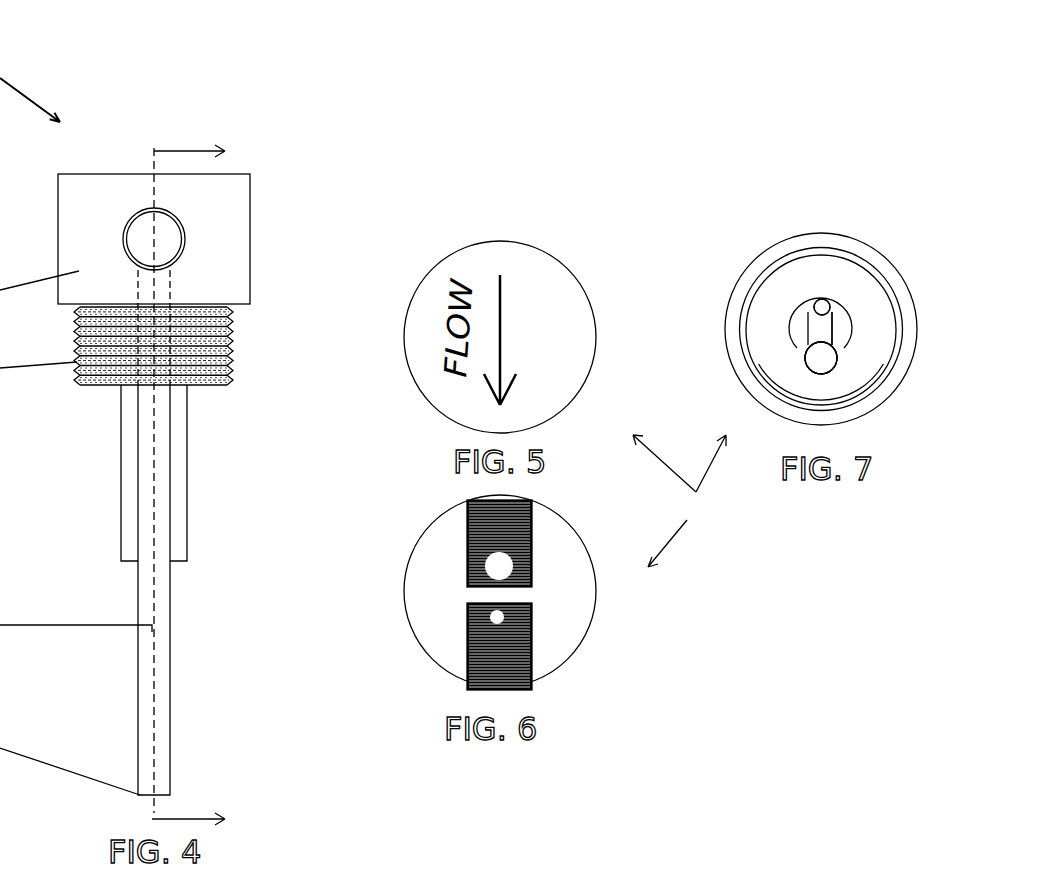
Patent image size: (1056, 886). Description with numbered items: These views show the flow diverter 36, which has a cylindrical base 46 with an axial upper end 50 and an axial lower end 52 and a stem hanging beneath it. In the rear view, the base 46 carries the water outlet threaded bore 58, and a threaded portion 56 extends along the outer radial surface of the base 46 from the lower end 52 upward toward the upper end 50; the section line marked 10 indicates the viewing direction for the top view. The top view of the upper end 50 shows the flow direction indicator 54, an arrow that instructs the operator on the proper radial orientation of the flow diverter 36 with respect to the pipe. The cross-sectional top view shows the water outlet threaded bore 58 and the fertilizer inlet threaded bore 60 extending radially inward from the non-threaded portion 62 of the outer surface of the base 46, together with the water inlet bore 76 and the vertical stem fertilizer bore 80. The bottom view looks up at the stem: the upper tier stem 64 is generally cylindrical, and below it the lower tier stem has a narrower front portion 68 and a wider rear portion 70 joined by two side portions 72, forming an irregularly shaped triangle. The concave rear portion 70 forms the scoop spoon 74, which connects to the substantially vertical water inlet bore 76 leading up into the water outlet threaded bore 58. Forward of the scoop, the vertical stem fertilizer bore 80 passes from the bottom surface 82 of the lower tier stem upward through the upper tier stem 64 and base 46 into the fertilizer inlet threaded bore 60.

In FIG. 4, the section line / viewing direction 10 is at (188, 475).
In FIG. 7, the flow diverter 36 is at (679, 501).
In FIG. 6, the cylindrical base 46 is at (450, 593).
In FIG. 4, the axial upper end 50 is at (228, 174).
In FIG. 5, the axial upper end 50 is at (477, 258).
In FIG. 4, the axial lower end 52 is at (202, 385).
In FIG. 5, the flow direction indicator 54 is at (498, 323).
In FIG. 7, the threaded portion 56 is at (830, 407).
In FIG. 4, the water outlet threaded bore 58 is at (163, 247).
In FIG. 6, the water outlet threaded bore 58 is at (468, 528).
In FIG. 6, the fertilizer inlet threaded bore 60 is at (532, 680).
In FIG. 7, the non-threaded portion 62 is at (778, 253).
In FIG. 7, the upper tier stem 64 is at (842, 318).
In FIG. 7, the front portion 68 is at (818, 302).
In FIG. 4, the rear portion 70 is at (158, 478).
In FIG. 7, the rear portion 70 is at (815, 345).
In FIG. 7, the side portions 72 is at (833, 330).
In FIG. 7, the scoop spoon 74 is at (815, 345).
In FIG. 4, the water inlet bore 76 is at (155, 363).
In FIG. 6, the water inlet bore 76 is at (495, 568).
In FIG. 7, the water inlet bore 76 is at (820, 360).
In FIG. 6, the vertical stem fertilizer bore 80 is at (468, 632).
In FIG. 7, the vertical stem fertilizer bore 80 is at (830, 303).
In FIG. 7, the bottom surface 82 is at (818, 330).